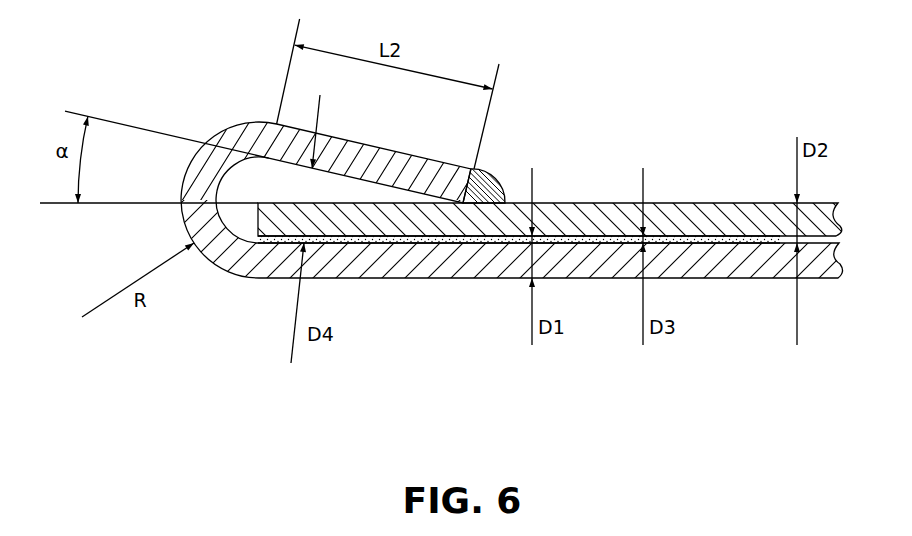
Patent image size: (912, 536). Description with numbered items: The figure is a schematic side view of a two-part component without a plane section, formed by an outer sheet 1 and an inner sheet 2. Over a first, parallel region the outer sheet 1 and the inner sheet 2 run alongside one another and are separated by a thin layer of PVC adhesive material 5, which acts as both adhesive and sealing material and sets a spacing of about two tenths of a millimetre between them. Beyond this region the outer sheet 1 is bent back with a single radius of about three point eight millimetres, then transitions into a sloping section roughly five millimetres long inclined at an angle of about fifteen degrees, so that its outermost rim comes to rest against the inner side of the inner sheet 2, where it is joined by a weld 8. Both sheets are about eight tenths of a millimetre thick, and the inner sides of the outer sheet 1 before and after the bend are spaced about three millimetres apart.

The outer sheet 1 is at (440, 272).
The inner sheet 2 is at (717, 201).
The adhesive material 5 is at (405, 247).
The weld 8 is at (498, 173).